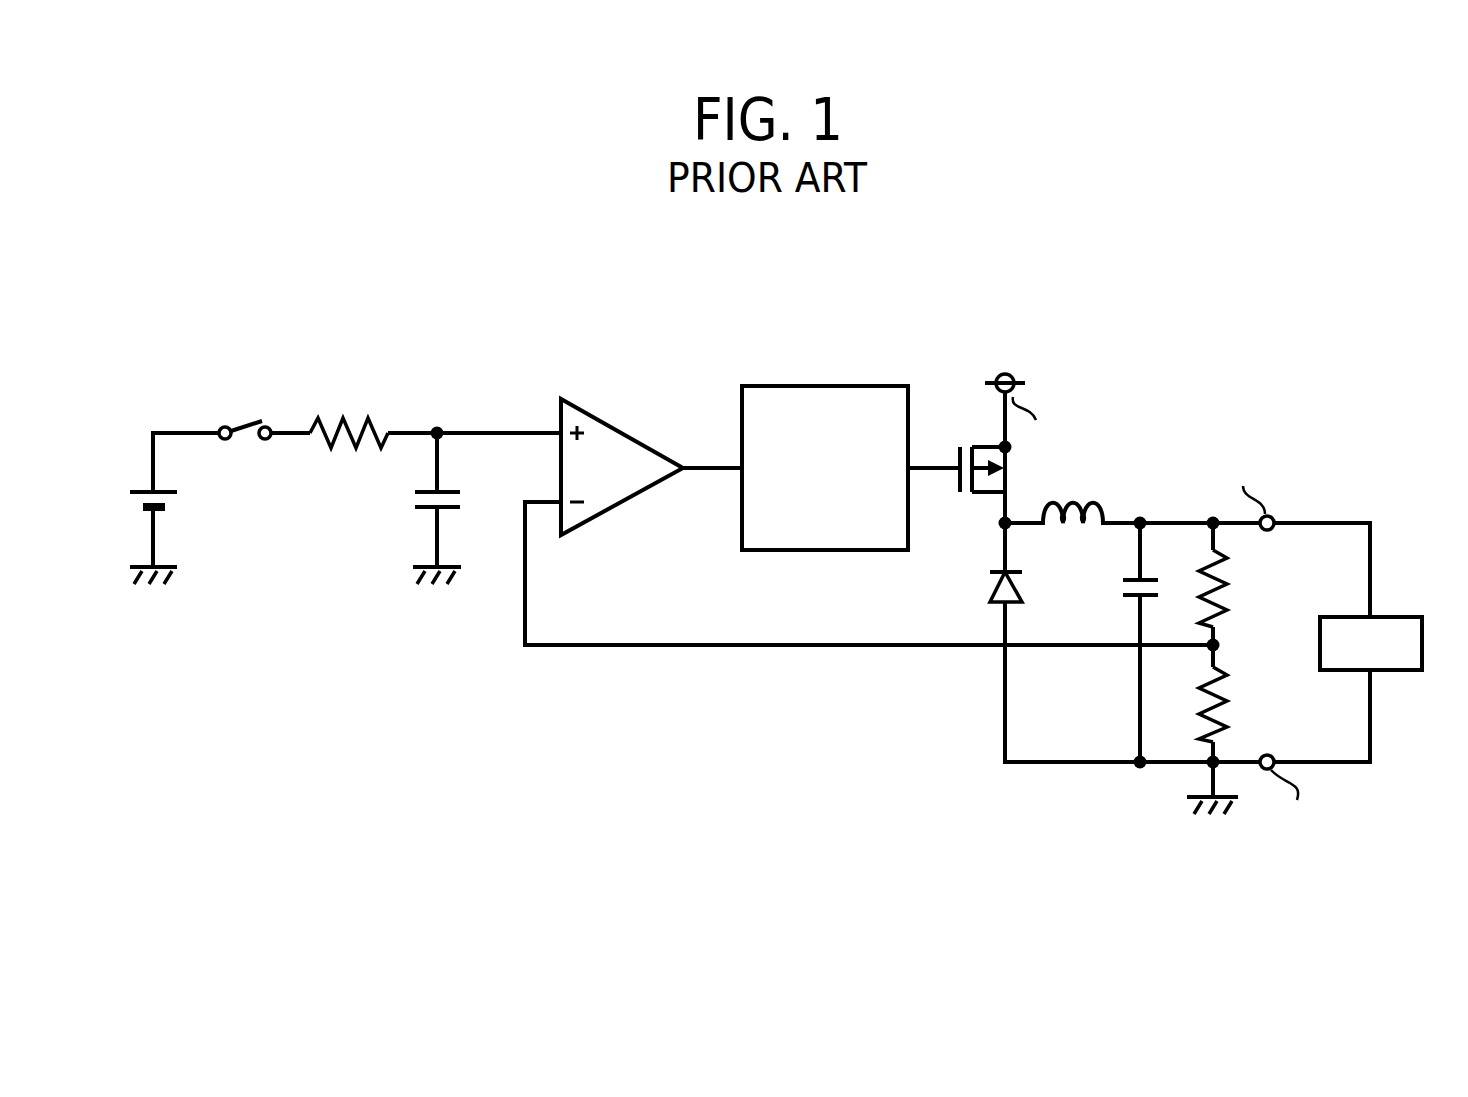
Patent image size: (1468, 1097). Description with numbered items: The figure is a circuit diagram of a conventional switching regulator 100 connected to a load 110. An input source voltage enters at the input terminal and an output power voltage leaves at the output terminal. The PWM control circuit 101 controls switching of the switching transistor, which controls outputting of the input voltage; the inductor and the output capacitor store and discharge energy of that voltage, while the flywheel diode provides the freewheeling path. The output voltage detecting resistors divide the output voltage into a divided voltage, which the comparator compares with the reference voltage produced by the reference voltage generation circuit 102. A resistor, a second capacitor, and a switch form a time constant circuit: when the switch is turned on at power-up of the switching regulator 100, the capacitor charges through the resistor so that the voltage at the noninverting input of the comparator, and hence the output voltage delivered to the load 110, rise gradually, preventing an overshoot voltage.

The switching regulator 100 is at (1166, 338).
The PWM control circuit 101 is at (793, 384).
The reference voltage generation circuit 102 is at (192, 503).
The load 110 is at (1397, 616).